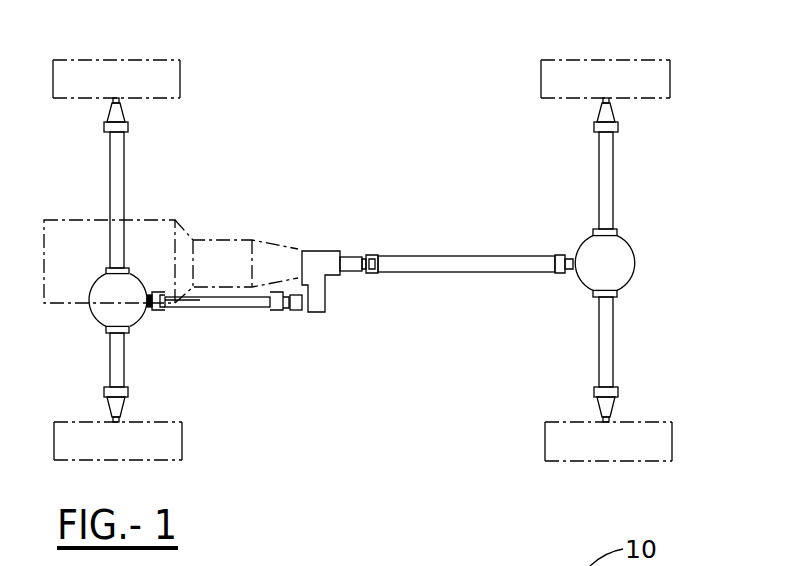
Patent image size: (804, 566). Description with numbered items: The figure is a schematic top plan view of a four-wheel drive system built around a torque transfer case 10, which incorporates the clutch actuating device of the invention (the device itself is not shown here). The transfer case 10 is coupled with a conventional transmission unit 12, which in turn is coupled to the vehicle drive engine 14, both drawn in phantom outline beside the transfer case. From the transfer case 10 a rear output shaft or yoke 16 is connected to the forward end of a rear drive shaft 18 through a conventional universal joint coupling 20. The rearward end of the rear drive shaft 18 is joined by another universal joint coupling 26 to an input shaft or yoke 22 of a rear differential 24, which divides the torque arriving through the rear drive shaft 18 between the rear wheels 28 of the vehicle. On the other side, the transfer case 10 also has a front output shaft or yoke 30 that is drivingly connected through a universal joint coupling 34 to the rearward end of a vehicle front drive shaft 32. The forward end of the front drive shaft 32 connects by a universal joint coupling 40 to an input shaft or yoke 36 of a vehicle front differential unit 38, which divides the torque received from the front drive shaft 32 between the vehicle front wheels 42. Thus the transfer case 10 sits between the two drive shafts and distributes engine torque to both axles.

The torque transfer case 10 is at (319, 240).
The transmission unit 12 is at (203, 238).
The vehicle drive engine 14 is at (137, 220).
The rear output shaft or yoke 16 is at (367, 256).
The rear drive shaft 18 is at (480, 256).
The universal joint coupling 20 is at (370, 272).
The input shaft or yoke 22 is at (573, 255).
The rear differential 24 is at (633, 263).
The universal joint coupling 26 is at (565, 272).
The rear wheels 28 is at (560, 60).
The front output shaft or yoke 30 is at (290, 310).
The front drive shaft 32 is at (195, 308).
The universal joint coupling 34 is at (280, 310).
The input shaft or yoke 36 is at (150, 312).
The vehicle front differential unit 38 is at (97, 320).
The universal joint coupling 40 is at (164, 258).
The vehicle front wheels 42 is at (135, 60).